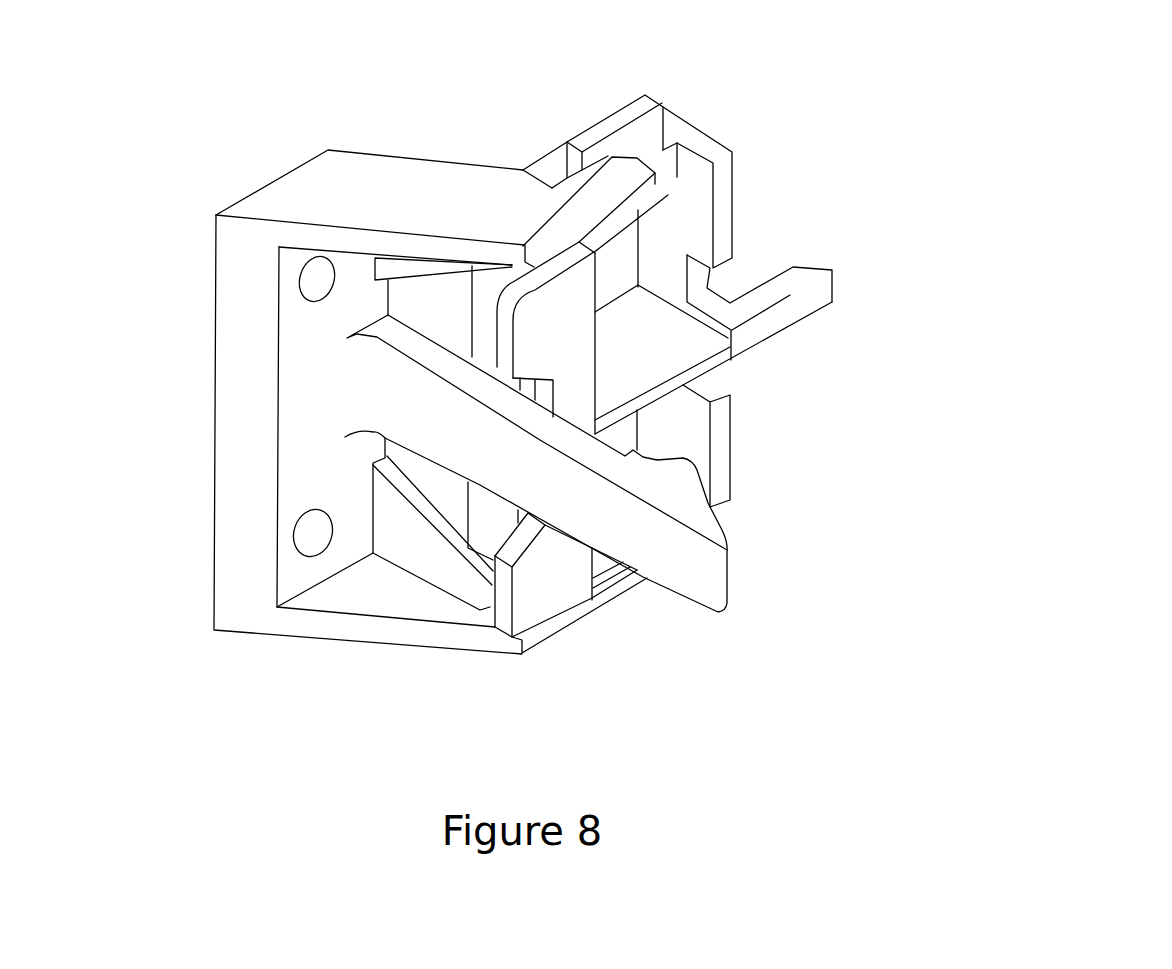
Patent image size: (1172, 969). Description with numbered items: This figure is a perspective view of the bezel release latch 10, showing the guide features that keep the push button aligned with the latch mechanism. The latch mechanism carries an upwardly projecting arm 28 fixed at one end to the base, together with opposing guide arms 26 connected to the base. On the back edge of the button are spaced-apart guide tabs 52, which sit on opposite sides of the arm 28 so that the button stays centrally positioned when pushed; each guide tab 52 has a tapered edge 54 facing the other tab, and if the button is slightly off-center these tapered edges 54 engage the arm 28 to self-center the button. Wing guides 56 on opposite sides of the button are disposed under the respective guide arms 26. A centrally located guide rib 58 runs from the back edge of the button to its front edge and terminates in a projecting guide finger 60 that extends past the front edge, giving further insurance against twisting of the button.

The bezel release latch 10 is at (950, 175).
The guide arm 26 is at (482, 203).
The arm 28 is at (573, 495).
The guide tab 52 is at (553, 602).
The tapered edge 54 is at (497, 600).
The wing guide 56 is at (635, 133).
The guide rib 58 is at (645, 363).
The projecting guide finger 60 is at (808, 300).